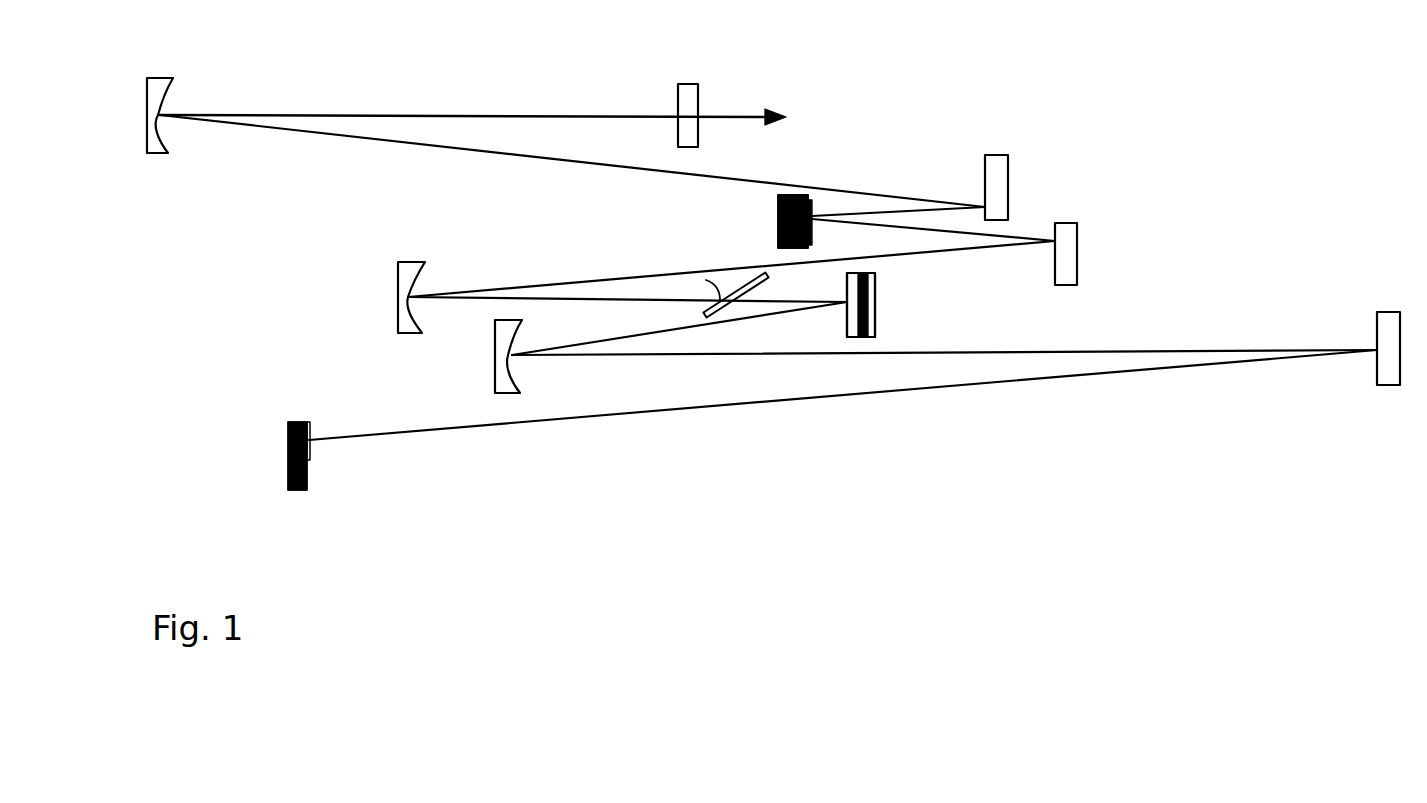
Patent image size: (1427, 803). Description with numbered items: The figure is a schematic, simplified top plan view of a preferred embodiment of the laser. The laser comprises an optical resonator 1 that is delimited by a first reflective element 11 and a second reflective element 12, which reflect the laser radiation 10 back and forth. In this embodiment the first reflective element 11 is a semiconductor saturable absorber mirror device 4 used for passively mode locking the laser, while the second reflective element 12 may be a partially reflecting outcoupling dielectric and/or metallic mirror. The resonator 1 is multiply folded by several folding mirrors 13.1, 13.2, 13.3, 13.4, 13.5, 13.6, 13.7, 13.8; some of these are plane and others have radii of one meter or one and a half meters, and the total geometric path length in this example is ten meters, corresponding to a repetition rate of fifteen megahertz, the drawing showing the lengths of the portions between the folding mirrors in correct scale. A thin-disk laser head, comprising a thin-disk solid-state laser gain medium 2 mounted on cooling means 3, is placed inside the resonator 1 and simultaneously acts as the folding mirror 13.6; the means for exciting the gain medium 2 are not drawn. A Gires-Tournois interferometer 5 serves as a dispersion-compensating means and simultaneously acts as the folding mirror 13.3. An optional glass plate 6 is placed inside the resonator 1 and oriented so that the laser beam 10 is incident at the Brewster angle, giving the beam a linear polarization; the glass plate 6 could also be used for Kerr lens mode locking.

The optical resonator 1 is at (907, 120).
The thin-disk solid-state laser gain medium 2 is at (812, 210).
The cooling means 3 is at (778, 208).
The semiconductor saturable absorber mirror device 4 is at (310, 452).
The Gires-Tournois interferometer 5 is at (875, 290).
The glass plate 6 is at (765, 290).
The laser radiation 10 is at (767, 402).
The first reflective element 11 is at (268, 427).
The second reflective element 12 is at (688, 84).
The folding mirror 13.1 is at (1390, 377).
The folding mirror 13.2 is at (507, 378).
The folding mirror 13.3 is at (893, 322).
The folding mirror 13.4 is at (403, 325).
The folding mirror 13.5 is at (1065, 270).
The folding mirror 13.6 is at (762, 229).
The folding mirror 13.7 is at (1000, 165).
The folding mirror 13.8 is at (157, 153).